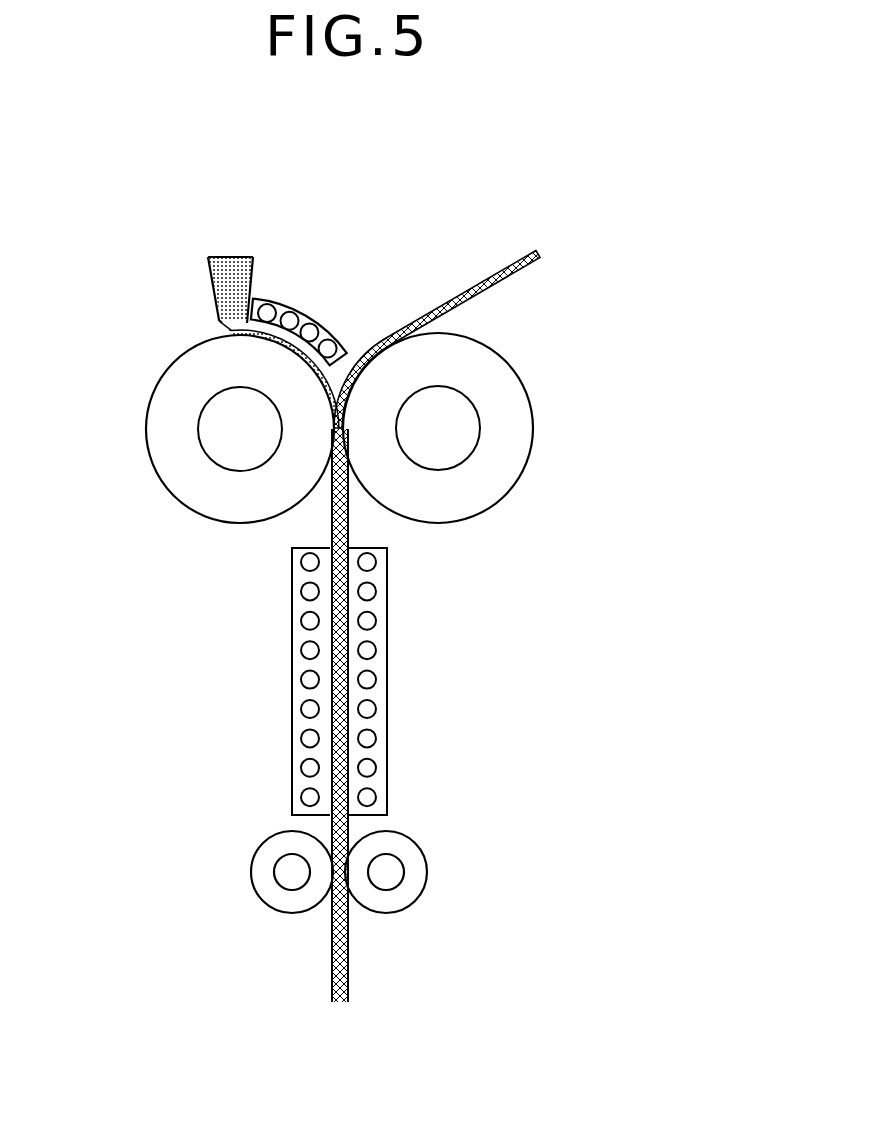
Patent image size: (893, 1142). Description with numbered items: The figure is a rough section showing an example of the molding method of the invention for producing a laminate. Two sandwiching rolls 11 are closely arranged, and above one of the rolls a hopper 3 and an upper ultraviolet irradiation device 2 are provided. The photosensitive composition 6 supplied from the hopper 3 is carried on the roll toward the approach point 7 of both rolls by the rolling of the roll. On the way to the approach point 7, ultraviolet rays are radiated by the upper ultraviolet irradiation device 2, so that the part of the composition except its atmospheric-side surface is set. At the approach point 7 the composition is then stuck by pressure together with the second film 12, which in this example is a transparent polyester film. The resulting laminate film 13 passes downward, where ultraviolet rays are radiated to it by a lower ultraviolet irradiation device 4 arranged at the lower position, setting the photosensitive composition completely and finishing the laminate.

The upper ultraviolet irradiation device 2 is at (297, 307).
The hopper 3 is at (208, 259).
The lower ultraviolet irradiation device 4 is at (302, 756).
The powder 6 is at (233, 263).
The approach point 7 is at (348, 438).
The sandwiching rolls 11 is at (160, 468).
The second film 12 is at (433, 312).
The laminate film 13 is at (332, 522).